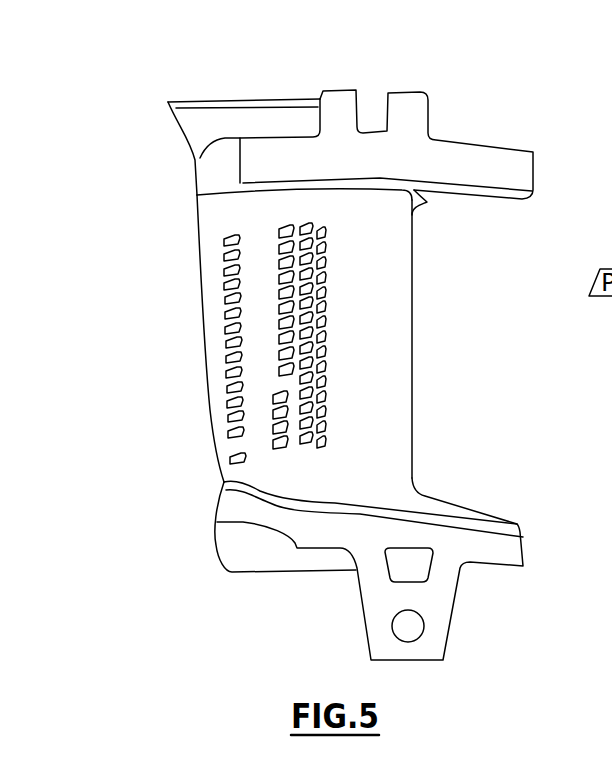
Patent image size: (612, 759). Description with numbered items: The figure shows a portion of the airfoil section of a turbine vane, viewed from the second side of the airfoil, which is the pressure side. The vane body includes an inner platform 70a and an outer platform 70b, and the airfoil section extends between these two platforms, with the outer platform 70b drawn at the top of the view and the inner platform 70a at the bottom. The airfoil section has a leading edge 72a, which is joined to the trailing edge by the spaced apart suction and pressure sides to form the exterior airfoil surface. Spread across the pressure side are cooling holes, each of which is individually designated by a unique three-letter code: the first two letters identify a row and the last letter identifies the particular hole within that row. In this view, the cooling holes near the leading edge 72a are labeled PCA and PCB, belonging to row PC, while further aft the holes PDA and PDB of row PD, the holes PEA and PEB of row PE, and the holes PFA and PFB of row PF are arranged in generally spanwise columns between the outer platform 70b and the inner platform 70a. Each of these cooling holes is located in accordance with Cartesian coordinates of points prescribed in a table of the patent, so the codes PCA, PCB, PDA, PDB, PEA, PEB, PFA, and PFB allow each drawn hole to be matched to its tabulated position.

The inner platform 70a is at (498, 550).
The outer platform 70b is at (481, 163).
The leading edge 72a is at (388, 379).
The cooling hole PCA is at (224, 253).
The cooling hole PCB is at (224, 238).
The cooling hole PDA is at (137, 637).
The cooling hole PDB is at (276, 378).
The cooling hole PEA is at (312, 343).
The cooling hole PEB is at (307, 223).
The cooling hole PFA is at (320, 392).
The cooling hole PFB is at (320, 228).